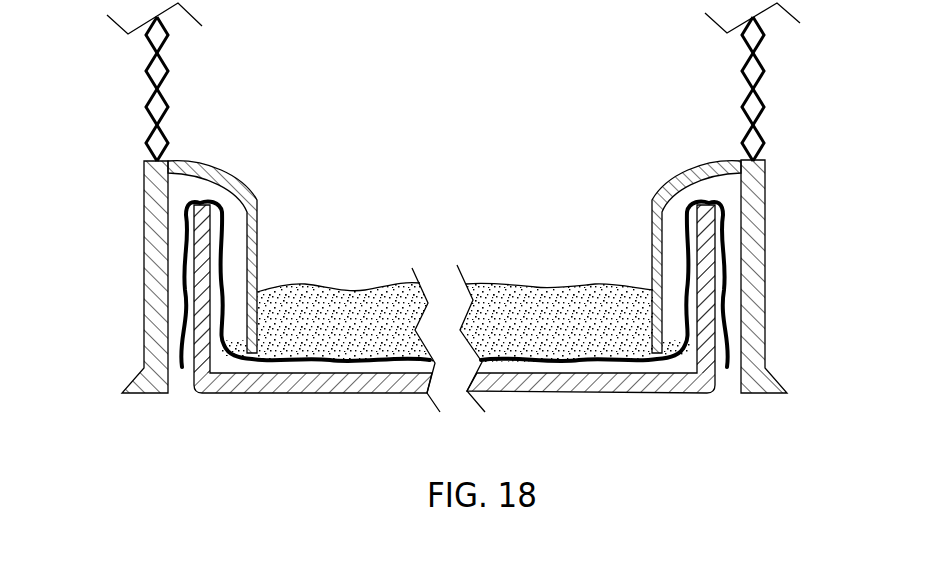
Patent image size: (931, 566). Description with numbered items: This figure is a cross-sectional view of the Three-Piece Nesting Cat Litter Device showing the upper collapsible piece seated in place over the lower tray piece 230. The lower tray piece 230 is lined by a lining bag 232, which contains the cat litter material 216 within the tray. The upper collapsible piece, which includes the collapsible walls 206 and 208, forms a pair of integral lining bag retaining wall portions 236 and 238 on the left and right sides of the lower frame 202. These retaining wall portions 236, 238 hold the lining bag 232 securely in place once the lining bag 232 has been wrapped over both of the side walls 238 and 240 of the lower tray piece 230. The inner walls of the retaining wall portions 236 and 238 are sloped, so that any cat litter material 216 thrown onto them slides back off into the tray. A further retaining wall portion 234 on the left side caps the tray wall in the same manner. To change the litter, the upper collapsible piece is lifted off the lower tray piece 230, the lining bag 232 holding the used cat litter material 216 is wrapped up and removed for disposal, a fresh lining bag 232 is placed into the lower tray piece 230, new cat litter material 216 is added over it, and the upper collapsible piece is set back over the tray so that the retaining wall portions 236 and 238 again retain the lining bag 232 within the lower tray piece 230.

The lower frame 202 is at (143, 312).
The collapsible wall 206 is at (760, 50).
The collapsible wall 208 is at (162, 92).
The cat litter material 216 is at (548, 285).
The lower tray piece 230 is at (318, 397).
The lining bag 232 is at (187, 247).
The channel cap 234 is at (214, 177).
The integral lining bag retaining wall portion 236 is at (696, 166).
The integral lining bag retaining wall portion 238 is at (213, 262).
The side wall 240 is at (683, 240).